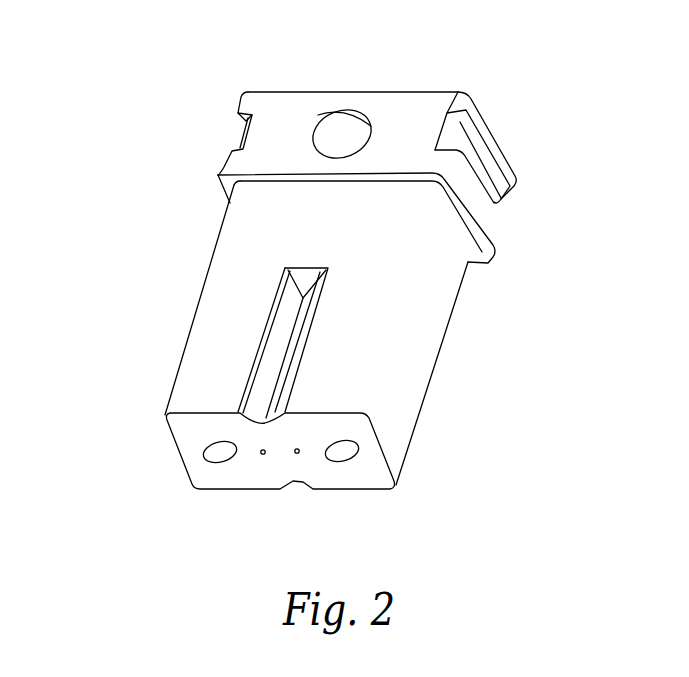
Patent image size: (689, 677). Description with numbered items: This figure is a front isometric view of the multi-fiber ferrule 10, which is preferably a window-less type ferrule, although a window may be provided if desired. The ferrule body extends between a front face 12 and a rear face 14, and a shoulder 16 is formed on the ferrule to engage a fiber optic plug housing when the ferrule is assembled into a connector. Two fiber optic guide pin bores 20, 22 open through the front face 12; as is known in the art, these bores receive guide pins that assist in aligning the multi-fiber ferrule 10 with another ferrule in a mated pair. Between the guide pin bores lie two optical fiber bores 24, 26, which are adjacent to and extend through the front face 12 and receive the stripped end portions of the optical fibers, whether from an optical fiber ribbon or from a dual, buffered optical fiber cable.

The multi-fiber ferrule 10 is at (112, 266).
The front face 12 is at (378, 458).
The rear face 14 is at (493, 127).
The shoulder 16 is at (297, 105).
The fiber optic guide pin bore 20 is at (342, 461).
The fiber optic guide pin bore 22 is at (220, 462).
The optical fiber bore 24 is at (297, 456).
The optical fiber bore 26 is at (263, 457).